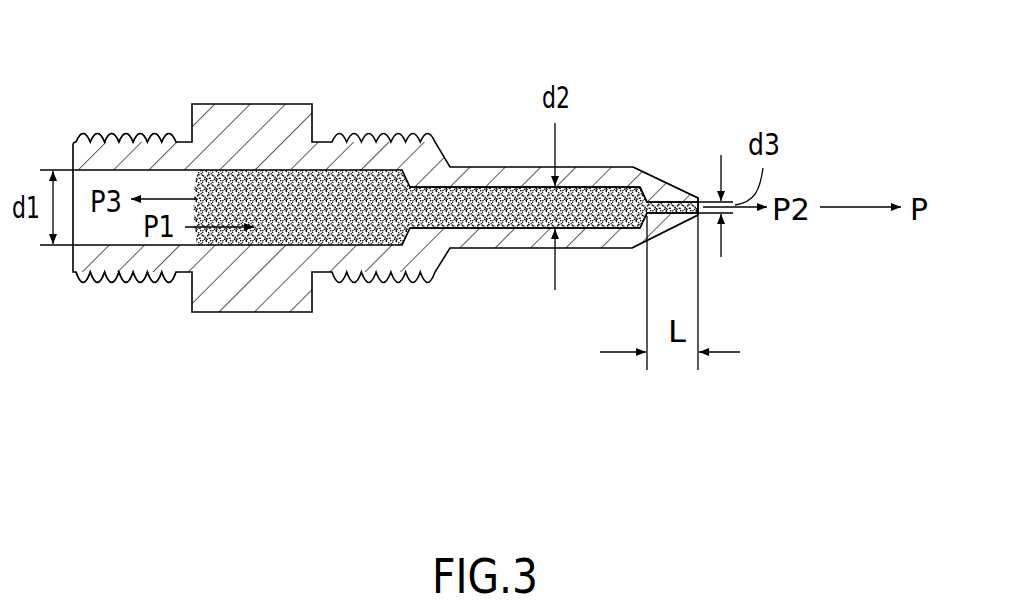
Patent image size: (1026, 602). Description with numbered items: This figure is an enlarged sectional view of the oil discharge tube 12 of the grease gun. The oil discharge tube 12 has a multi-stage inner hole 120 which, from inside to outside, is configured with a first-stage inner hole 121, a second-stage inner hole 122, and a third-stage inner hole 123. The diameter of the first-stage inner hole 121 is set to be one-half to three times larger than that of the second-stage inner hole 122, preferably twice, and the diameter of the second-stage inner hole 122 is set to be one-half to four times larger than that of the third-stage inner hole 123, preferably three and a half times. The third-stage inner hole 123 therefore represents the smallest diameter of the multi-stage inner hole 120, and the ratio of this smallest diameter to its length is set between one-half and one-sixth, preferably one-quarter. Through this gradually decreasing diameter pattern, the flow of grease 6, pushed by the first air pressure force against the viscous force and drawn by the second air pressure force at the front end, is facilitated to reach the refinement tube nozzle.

The oil discharge tube 12 is at (382, 133).
The multi-stage inner hole 120 is at (118, 232).
The first-stage inner hole 121 is at (132, 182).
The second-stage inner hole 122 is at (472, 203).
The third-stage inner hole 123 is at (672, 208).
The grease 6 is at (364, 215).